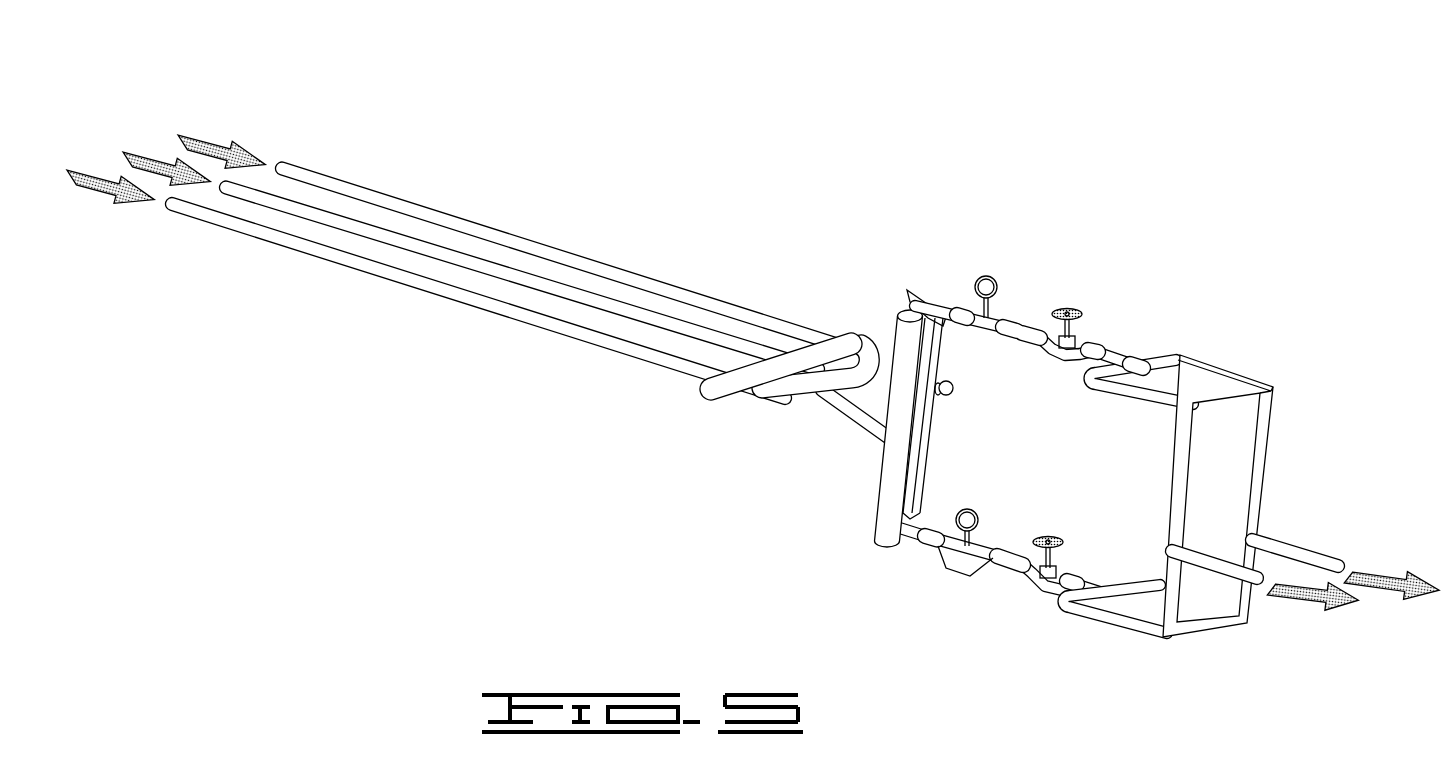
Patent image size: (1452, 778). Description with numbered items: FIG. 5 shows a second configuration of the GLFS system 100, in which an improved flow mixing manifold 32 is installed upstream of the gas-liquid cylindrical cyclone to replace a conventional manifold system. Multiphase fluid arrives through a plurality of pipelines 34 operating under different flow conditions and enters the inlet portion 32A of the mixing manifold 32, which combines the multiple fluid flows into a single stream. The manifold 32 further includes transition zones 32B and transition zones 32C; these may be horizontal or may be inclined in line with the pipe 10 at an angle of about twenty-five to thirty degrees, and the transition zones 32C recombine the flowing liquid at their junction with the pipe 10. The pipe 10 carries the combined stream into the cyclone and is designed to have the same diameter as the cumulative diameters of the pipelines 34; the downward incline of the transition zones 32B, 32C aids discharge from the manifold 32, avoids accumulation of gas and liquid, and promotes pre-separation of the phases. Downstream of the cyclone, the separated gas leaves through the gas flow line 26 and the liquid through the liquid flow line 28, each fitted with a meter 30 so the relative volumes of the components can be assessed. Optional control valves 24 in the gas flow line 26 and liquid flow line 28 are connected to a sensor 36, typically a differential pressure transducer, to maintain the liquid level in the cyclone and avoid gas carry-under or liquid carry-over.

The GLFS system 100 is at (751, 347).
The pipe 10 is at (855, 420).
The control valves 24 is at (1076, 306).
The gas flow line 26 is at (1117, 352).
The liquid flow line 28 is at (1088, 583).
The meters 30 is at (987, 276).
The flow mixing manifold 32 is at (786, 376).
The inlet portion 32A is at (853, 333).
The transition zones 32B is at (871, 362).
The transition zones 32C is at (810, 403).
The pipelines 34 is at (318, 208).
The sensor 36 is at (957, 386).